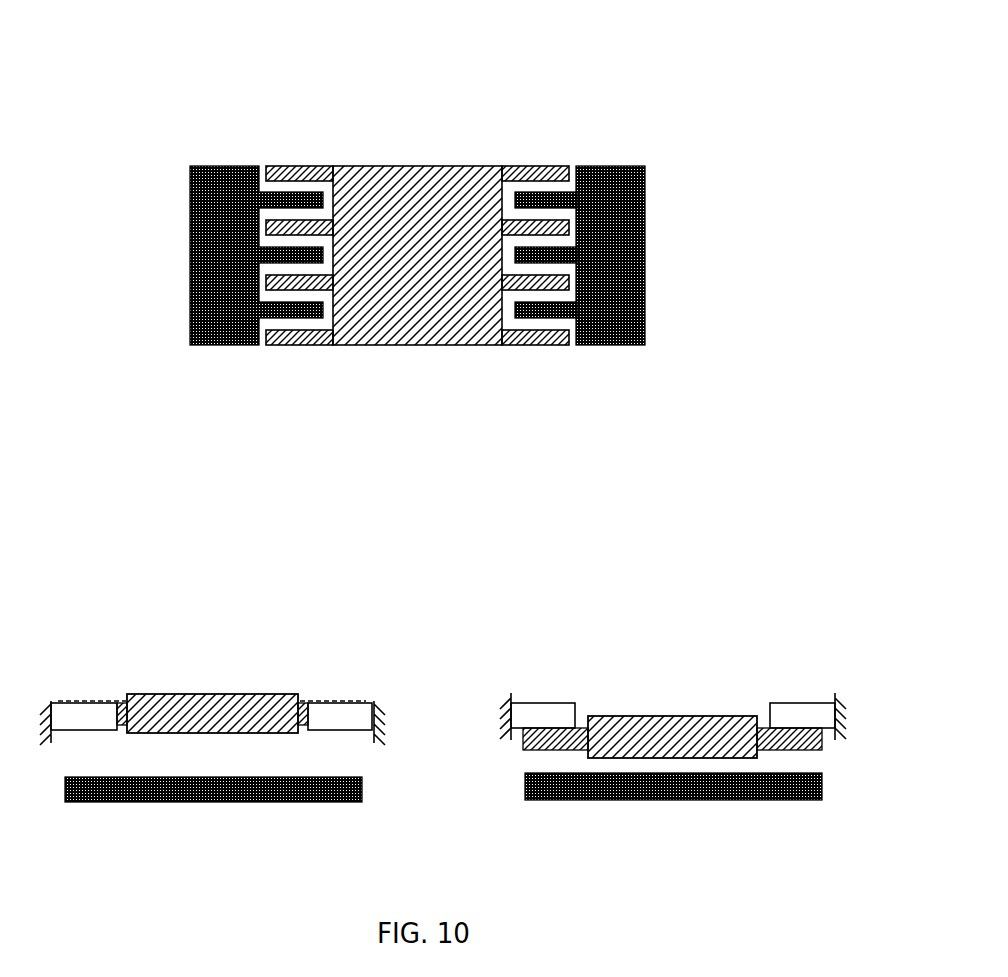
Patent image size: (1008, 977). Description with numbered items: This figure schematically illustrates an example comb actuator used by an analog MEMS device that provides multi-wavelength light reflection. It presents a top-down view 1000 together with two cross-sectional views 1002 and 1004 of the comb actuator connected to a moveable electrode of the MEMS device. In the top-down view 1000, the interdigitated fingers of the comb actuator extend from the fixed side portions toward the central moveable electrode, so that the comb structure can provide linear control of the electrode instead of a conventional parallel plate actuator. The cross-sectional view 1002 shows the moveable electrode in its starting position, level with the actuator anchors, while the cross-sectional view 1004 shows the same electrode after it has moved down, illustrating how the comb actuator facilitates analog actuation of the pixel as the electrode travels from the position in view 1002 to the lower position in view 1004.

The top-down view 1000 is at (442, 80).
The cross-sectional view 1002 is at (213, 592).
The cross-sectional view 1004 is at (723, 570).